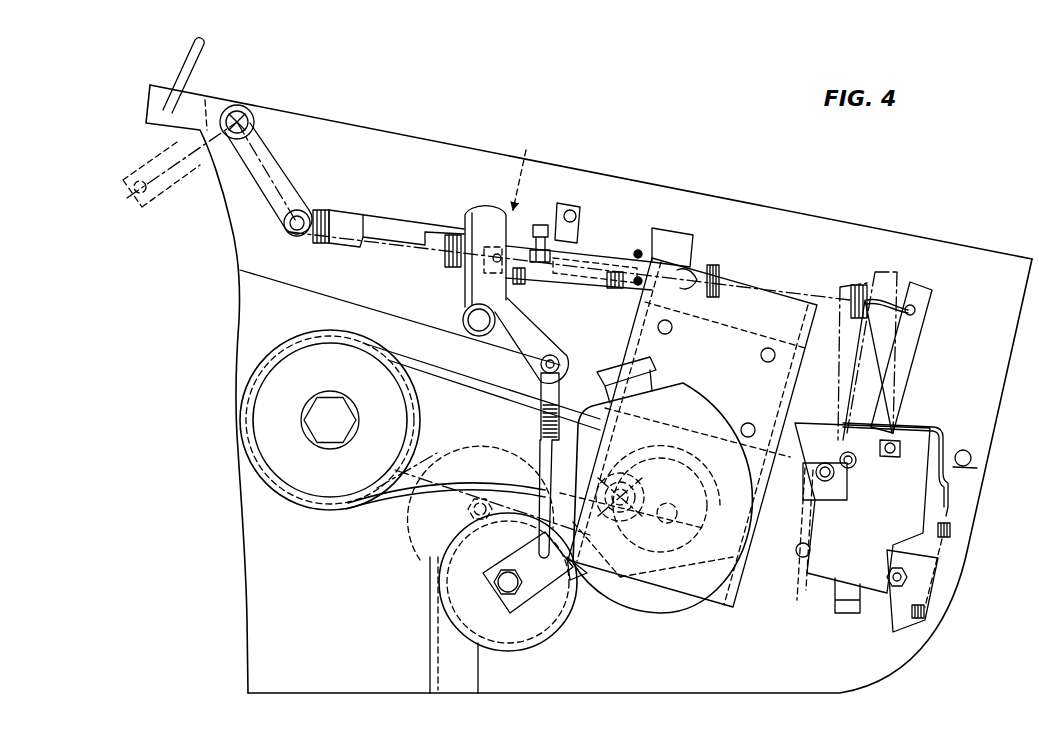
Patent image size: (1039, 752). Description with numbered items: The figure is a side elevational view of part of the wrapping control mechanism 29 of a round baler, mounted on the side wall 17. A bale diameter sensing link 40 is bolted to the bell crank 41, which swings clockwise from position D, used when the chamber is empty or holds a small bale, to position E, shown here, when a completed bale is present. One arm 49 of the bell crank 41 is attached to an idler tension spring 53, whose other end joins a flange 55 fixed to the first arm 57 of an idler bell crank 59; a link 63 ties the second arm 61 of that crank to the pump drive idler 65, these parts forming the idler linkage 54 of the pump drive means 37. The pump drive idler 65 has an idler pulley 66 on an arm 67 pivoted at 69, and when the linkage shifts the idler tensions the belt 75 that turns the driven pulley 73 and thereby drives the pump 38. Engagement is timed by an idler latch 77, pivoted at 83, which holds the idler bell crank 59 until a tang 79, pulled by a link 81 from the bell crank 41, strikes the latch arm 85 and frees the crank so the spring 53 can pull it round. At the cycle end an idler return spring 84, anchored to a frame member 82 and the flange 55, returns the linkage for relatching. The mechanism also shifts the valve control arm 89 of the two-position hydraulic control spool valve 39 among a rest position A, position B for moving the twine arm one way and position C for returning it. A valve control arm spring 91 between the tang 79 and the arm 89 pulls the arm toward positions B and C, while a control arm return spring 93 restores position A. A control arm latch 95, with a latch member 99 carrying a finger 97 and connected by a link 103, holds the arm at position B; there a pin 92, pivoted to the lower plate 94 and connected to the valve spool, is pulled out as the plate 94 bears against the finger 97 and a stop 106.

The side wall 17 is at (294, 627).
The wrapping control mechanism 29 is at (560, 180).
The pump drive means 37 is at (352, 574).
The pump 38 is at (631, 590).
The two-position hydraulic control spool valve 39 is at (866, 542).
The bale diameter sensing link 40 is at (188, 77).
The bell crank 41 is at (263, 103).
The arm of bell crank 49 is at (298, 182).
The idler tension spring 53 is at (329, 211).
The idler linkage 54 is at (517, 378).
The flange 55 is at (510, 180).
The first arm of idler bell crank 57 is at (484, 214).
The idler bell crank 59 is at (468, 338).
The second arm of idler bell crank 61 is at (564, 351).
The link 63 is at (541, 455).
The pump drive idler 65 is at (424, 612).
The idler pulley 66 is at (437, 580).
The arm 67 is at (534, 585).
The pivot 69 is at (628, 512).
The driven pulley 73 is at (718, 558).
The belt 75 is at (330, 442).
The idler latch 77 is at (511, 198).
The tang 79 is at (652, 240).
The link 81 is at (381, 226).
The frame member 82 is at (718, 364).
The pivot 83 is at (545, 226).
The idler return spring 84 is at (514, 282).
The arm of latch 85 is at (533, 224).
The valve control arm 89 is at (913, 344).
The valve control arm spring 91 is at (716, 266).
The pin 92 is at (889, 459).
The control arm return spring 93 is at (951, 533).
The lower plate 94 is at (926, 422).
The control arm latch 95 is at (800, 567).
The finger 97 is at (838, 459).
The latch member 99 is at (820, 480).
The link 103 is at (800, 529).
The stop 106 is at (963, 449).
The rest position A is at (927, 291).
The position B is at (890, 270).
The position C is at (863, 283).
The position D is at (272, 170).
The position E is at (178, 143).